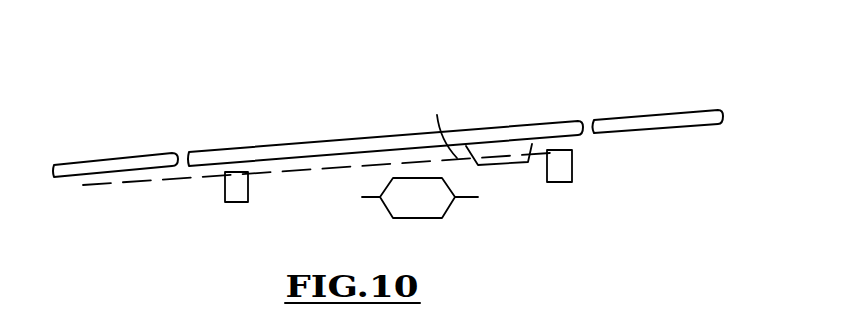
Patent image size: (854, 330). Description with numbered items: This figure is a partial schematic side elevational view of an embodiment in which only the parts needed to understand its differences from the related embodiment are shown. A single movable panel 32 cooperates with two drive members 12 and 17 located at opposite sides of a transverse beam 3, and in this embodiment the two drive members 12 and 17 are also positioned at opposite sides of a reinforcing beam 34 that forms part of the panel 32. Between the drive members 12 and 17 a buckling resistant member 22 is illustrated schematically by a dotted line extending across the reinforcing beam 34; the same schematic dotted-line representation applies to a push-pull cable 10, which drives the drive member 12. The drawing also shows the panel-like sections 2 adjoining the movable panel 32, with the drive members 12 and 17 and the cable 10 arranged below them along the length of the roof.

The carrier section 2 is at (89, 167).
The transverse beam 3 is at (438, 207).
The push-pull cable 10 is at (128, 183).
The drive member 12 is at (232, 196).
The drive member 17 is at (562, 170).
The buckling resistant member 22 is at (439, 120).
The movable panel 32 is at (350, 142).
The reinforcing beam 34 is at (519, 163).